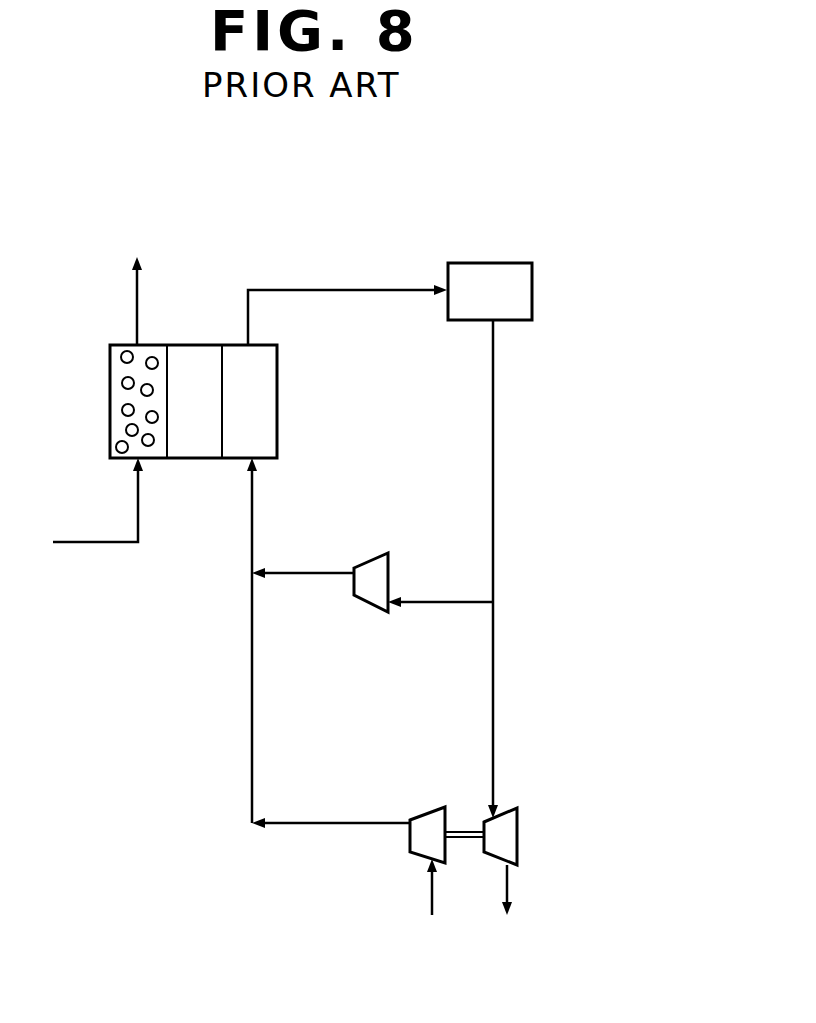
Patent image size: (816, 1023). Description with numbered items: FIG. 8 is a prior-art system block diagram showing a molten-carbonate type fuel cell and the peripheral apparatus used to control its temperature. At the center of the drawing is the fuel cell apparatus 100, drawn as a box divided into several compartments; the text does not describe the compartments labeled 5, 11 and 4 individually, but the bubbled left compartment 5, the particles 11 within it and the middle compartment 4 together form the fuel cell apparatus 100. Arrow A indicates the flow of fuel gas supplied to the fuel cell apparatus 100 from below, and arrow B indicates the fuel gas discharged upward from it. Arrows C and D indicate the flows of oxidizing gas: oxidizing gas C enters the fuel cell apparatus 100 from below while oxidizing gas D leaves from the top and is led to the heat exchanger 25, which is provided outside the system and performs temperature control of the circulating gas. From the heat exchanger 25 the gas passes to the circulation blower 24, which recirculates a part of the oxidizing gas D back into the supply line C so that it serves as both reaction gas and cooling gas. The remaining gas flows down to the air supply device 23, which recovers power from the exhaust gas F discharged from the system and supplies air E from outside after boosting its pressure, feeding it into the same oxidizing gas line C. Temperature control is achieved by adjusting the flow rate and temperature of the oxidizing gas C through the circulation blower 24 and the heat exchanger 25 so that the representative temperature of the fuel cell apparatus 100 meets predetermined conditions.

The fuel cell apparatus 100 is at (200, 315).
The reaction zone 5 is at (115, 400).
The catalyst particles 11 is at (127, 432).
The separation zone 4 is at (188, 463).
The heat exchanger 25 is at (487, 263).
The circulation blower 24 is at (372, 575).
The air supply device 23 is at (518, 813).
The fuel gas supply flow A is at (80, 547).
The fuel gas discharge flow B is at (137, 296).
The oxidizing gas flow C is at (252, 511).
The oxidizing gas flow D is at (248, 313).
The air E is at (432, 890).
The exhaust gas F is at (508, 882).